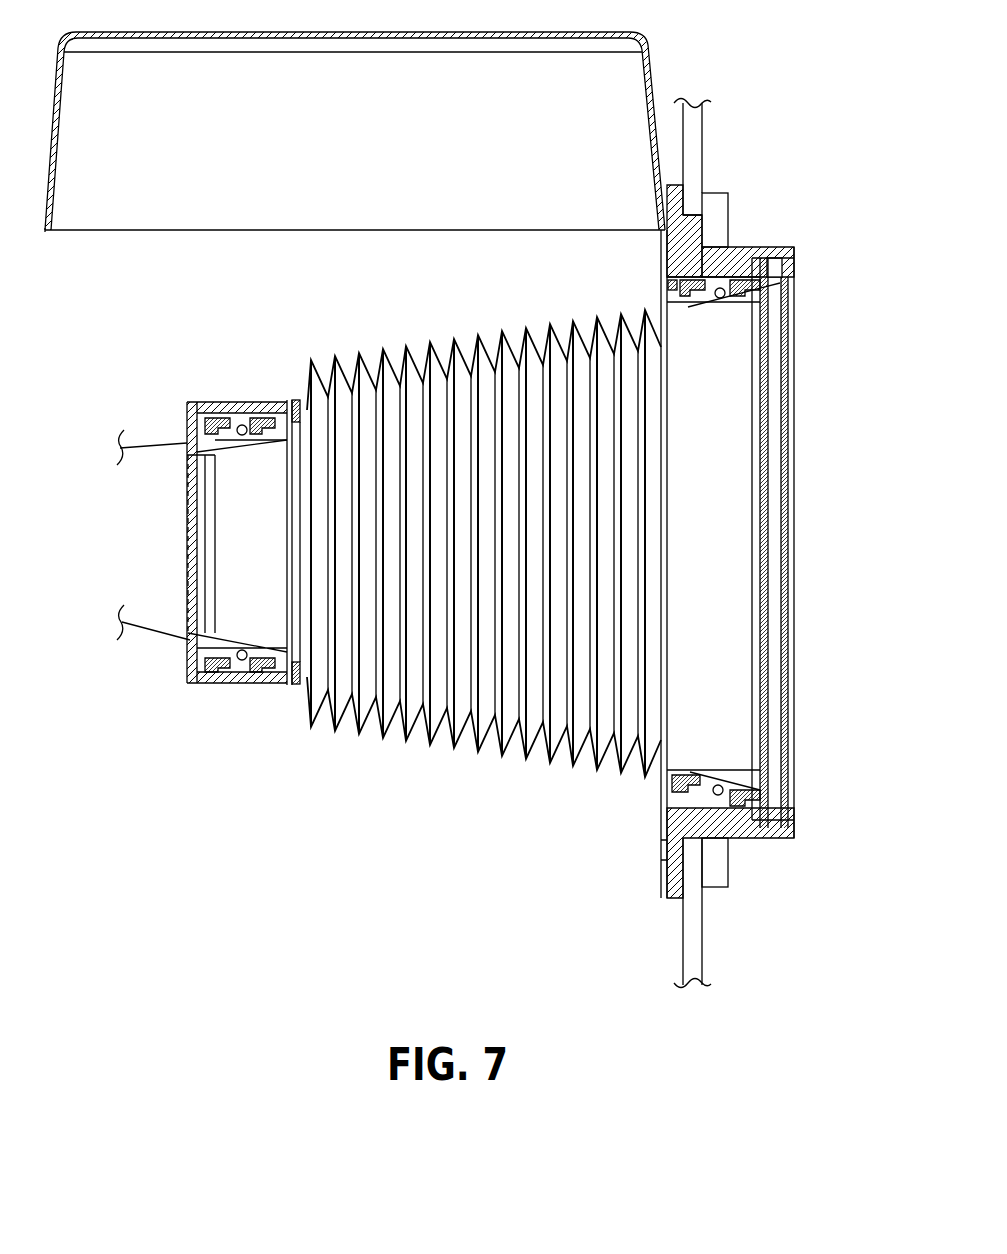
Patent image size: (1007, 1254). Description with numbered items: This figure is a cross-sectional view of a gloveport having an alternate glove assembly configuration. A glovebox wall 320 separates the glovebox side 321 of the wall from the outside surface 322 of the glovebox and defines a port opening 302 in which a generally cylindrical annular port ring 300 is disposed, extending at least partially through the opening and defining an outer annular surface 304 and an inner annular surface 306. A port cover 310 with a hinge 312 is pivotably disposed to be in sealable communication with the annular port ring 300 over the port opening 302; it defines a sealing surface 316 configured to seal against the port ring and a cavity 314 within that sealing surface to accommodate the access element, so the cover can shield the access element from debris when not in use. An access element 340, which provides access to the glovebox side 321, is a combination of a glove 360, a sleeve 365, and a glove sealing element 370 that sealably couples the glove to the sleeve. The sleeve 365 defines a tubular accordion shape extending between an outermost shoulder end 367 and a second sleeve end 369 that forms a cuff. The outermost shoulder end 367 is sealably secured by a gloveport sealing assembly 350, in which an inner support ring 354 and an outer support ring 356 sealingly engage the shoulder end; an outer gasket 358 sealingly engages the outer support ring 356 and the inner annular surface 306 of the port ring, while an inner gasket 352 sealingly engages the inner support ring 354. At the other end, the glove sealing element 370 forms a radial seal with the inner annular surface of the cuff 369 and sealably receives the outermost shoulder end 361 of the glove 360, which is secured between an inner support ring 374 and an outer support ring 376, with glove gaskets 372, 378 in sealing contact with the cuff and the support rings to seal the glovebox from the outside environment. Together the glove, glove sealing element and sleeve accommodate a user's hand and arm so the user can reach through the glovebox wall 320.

The annular port ring 300 is at (690, 237).
The port opening 302 is at (732, 607).
The outer annular surface 304 is at (733, 247).
The inner annular surface 306 is at (743, 268).
The port cover 310 is at (53, 187).
The hinge 312 is at (661, 228).
The cavity 314 is at (370, 207).
The sealing surface 316 is at (42, 233).
The glovebox wall 320 is at (693, 138).
The glovebox side 321 is at (532, 853).
The outside surface 322 is at (703, 110).
The access element 340 is at (312, 852).
The gloveport sealing assembly 350 is at (775, 290).
The inner gasket 352 is at (670, 284).
The inner support ring 354 is at (687, 290).
The outer support ring 356 is at (740, 305).
The outer gasket 358 is at (765, 278).
The glove 360 is at (138, 630).
The outermost shoulder end 361 is at (257, 680).
The sleeve 365 is at (415, 740).
The outermost shoulder end 367 is at (730, 805).
The second sleeve end 369 is at (207, 680).
The glove sealing element 370 is at (165, 413).
The glove gasket 372 is at (203, 412).
The inner support ring 374 is at (218, 407).
The outer support ring 376 is at (253, 407).
The glove gasket 378 is at (294, 400).